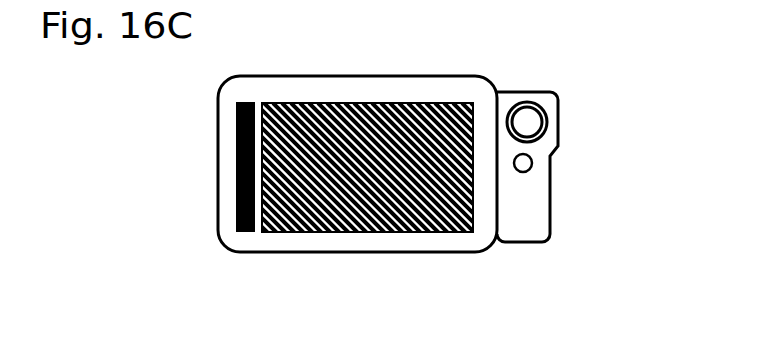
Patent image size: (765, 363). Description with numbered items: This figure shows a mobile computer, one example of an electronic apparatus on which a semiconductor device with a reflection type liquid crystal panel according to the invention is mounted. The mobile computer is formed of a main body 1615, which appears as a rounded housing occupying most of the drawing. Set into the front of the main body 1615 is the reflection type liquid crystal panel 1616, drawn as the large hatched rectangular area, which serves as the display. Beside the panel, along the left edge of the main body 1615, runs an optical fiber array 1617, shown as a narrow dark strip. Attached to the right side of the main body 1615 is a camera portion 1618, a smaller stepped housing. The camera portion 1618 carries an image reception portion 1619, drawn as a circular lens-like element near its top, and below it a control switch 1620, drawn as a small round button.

The main body 1615 is at (270, 90).
The reflection type liquid crystal panel 1616 is at (357, 125).
The optical fiber array 1617 is at (248, 232).
The camera portion 1618 is at (560, 95).
The image reception portion 1619 is at (525, 122).
The control switch 1620 is at (522, 172).